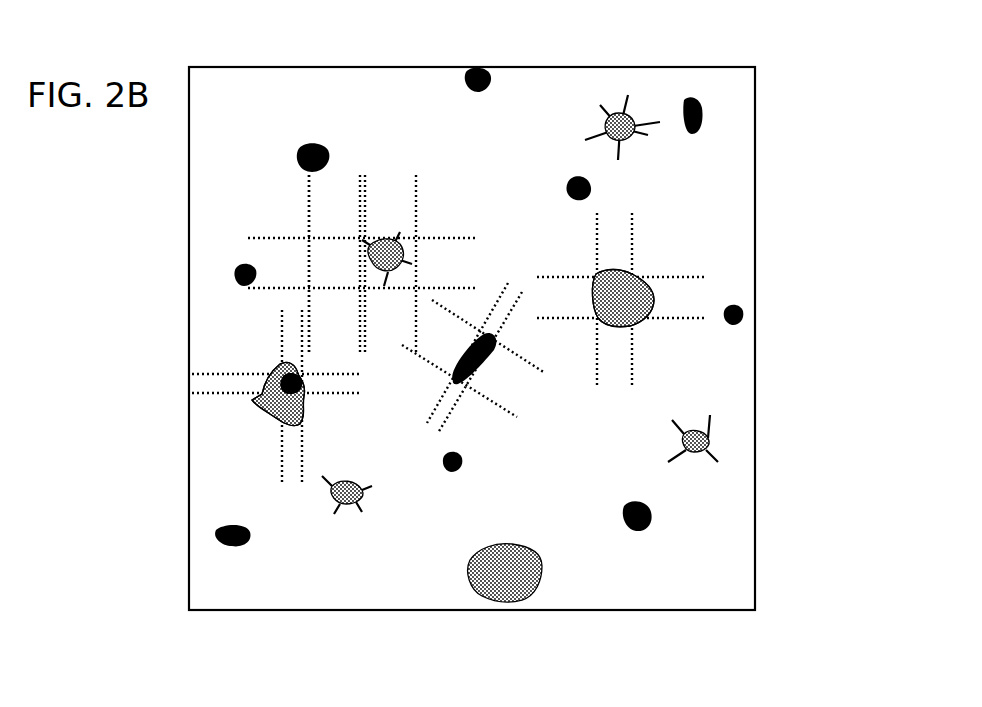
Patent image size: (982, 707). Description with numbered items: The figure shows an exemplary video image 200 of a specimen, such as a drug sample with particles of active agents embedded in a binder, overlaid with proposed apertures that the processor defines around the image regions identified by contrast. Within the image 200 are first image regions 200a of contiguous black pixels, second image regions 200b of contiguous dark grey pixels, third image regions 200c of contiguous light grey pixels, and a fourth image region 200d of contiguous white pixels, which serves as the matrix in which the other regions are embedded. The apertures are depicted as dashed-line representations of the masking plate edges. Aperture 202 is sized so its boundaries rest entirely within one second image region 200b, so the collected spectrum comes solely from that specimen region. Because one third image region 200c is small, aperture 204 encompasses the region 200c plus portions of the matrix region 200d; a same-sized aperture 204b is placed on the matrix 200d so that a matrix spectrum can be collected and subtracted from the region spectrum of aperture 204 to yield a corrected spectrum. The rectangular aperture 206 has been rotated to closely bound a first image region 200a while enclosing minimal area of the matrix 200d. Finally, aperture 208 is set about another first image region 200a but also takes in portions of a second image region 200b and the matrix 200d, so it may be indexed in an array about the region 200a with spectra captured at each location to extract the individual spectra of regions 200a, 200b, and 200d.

The video image 200 is at (180, 198).
The first image regions 200a is at (280, 372).
The second image regions 200b is at (253, 403).
The third image regions 200c is at (392, 238).
The fourth image region 200d is at (727, 137).
The aperture 202 is at (637, 323).
The aperture 204 is at (418, 238).
The aperture 204b is at (306, 256).
The rectangular aperture 206 is at (465, 387).
The aperture 208 is at (267, 413).